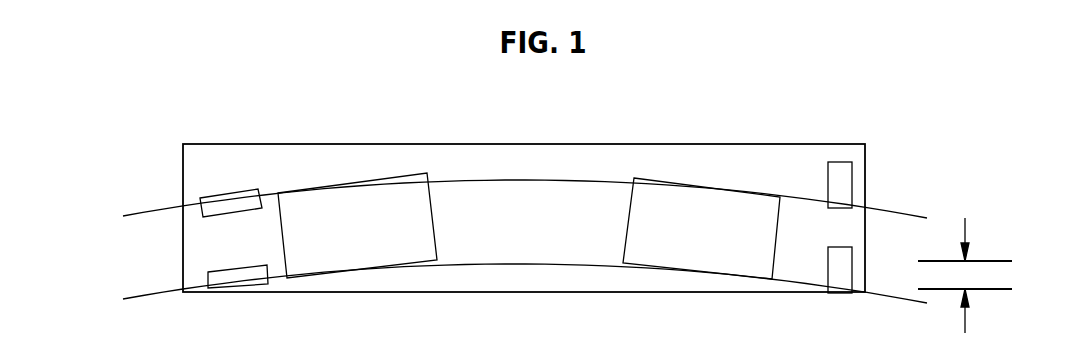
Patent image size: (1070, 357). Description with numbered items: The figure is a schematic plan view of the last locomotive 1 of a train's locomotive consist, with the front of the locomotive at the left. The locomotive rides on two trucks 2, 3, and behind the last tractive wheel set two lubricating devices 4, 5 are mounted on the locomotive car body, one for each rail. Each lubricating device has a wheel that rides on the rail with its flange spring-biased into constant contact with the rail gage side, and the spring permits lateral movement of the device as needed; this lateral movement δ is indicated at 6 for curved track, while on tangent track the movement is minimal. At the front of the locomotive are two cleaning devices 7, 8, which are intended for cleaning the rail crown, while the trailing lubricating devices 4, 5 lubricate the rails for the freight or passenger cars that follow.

The last locomotive 1 is at (555, 165).
The truck 2 is at (323, 233).
The truck 3 is at (683, 235).
The lubricating device 4 is at (878, 177).
The lubricating device 5 is at (877, 264).
The lateral movement δ 6 is at (990, 275).
The front cleaning device 7 is at (179, 178).
The front cleaning device 8 is at (175, 264).